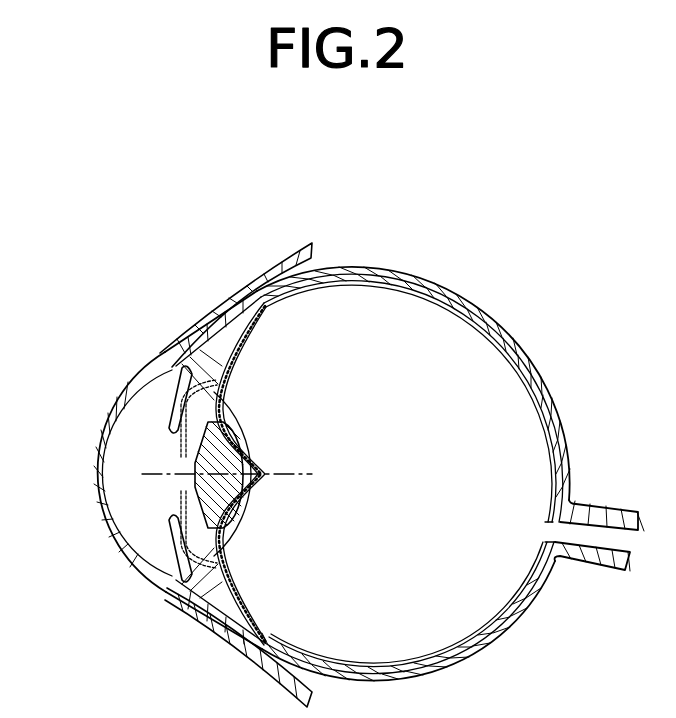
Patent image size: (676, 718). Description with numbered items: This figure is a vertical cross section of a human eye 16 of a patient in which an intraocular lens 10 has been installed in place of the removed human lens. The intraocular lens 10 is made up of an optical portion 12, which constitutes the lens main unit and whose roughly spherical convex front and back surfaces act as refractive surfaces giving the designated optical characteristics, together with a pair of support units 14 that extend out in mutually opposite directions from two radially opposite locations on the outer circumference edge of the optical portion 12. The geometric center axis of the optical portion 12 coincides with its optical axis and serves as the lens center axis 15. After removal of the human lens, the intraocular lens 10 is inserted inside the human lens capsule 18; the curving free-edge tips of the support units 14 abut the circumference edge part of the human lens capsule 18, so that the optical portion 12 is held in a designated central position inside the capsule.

The intraocular lens 10 is at (193, 467).
The optical portion 12 is at (173, 478).
The support unit 14 is at (208, 405).
The lens center axis 15 is at (177, 477).
The human eye 16 is at (106, 308).
The human lens capsule 18 is at (200, 558).